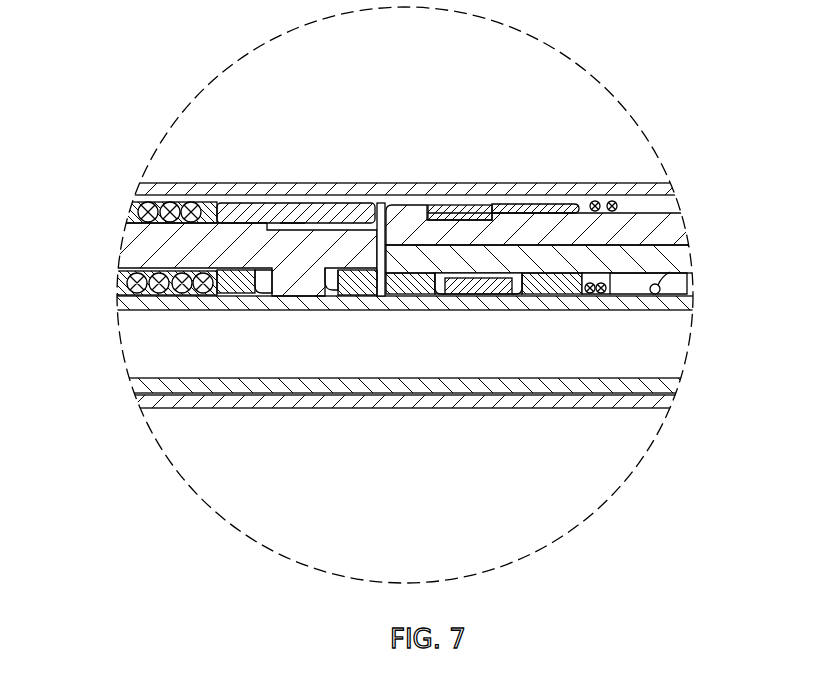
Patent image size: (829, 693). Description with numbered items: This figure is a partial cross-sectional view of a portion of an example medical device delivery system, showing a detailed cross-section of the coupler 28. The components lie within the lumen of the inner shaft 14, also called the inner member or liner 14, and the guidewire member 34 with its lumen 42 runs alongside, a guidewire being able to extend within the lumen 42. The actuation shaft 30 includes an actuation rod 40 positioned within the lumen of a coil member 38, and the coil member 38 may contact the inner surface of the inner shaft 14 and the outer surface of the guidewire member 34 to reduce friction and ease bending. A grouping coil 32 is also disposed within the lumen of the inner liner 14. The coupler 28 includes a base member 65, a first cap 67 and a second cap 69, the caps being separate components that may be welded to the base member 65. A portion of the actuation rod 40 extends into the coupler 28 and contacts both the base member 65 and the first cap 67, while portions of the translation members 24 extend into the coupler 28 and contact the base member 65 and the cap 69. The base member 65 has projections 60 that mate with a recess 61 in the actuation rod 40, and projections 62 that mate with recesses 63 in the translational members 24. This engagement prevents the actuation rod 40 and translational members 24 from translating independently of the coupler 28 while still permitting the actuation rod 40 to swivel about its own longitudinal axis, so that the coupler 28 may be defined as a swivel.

The inner shaft 14 is at (530, 188).
The translation members 24 is at (660, 232).
The coupler 28 is at (377, 300).
The actuation shaft 30 is at (147, 300).
The grouping coil 32 is at (612, 206).
The guidewire member 34 is at (407, 384).
The coil member 38 is at (168, 204).
The actuation rod 40 is at (140, 250).
The lumen of the guidewire member 42 is at (292, 378).
The projections 60 is at (293, 290).
The recess 61 is at (292, 204).
The projections 62 is at (453, 290).
The recesses 63 is at (481, 212).
The base member 65 is at (493, 290).
The first cap 67 is at (345, 204).
The second cap 69 is at (443, 205).